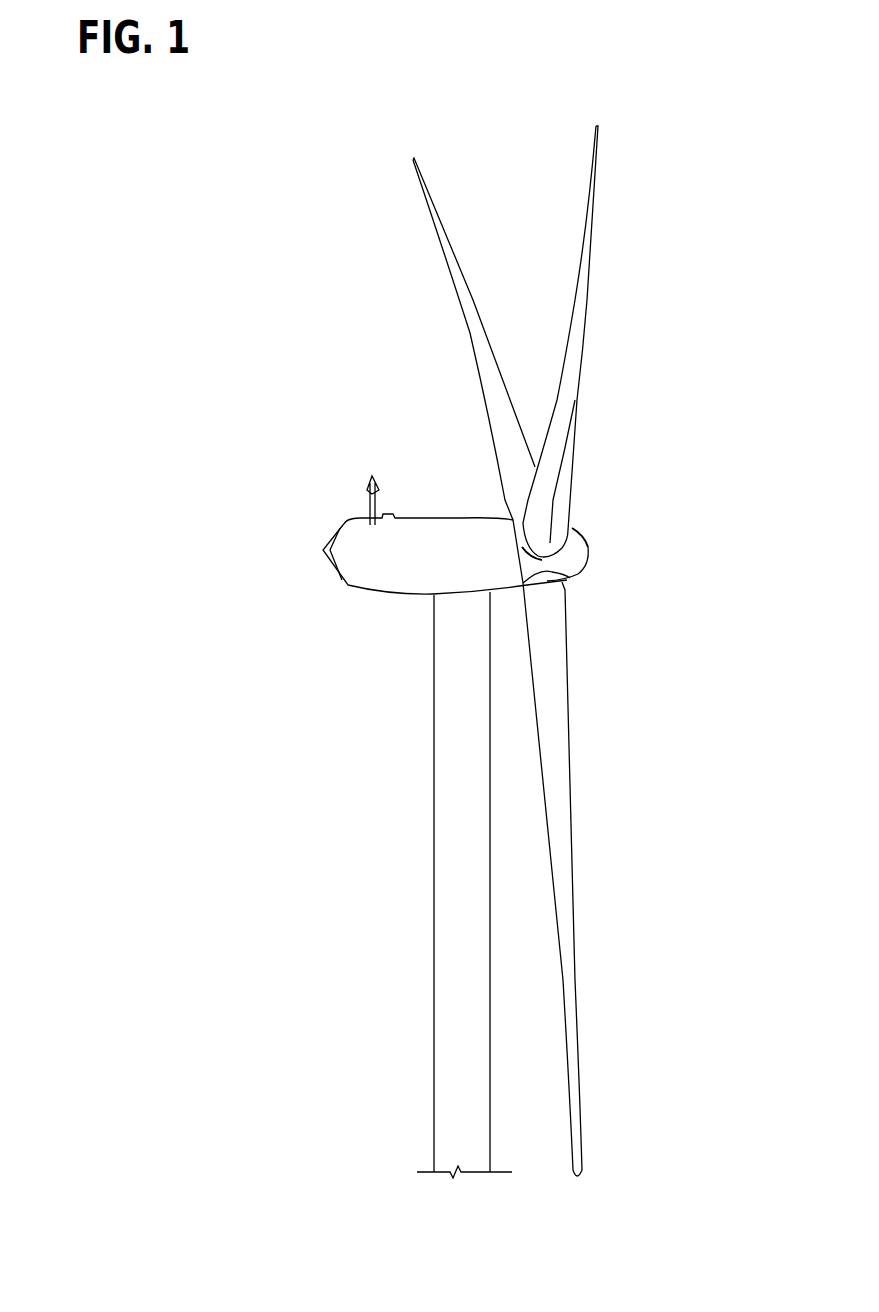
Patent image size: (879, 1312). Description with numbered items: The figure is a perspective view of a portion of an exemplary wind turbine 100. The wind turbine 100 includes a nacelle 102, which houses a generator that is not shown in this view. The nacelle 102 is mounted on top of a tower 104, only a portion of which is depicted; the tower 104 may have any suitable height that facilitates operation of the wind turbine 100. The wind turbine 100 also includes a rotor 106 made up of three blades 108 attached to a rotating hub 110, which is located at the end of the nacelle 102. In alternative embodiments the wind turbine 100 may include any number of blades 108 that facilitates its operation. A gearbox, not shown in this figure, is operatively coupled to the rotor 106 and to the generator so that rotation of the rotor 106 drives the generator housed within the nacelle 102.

The wind turbine 100 is at (313, 203).
The nacelle 102 is at (377, 590).
The tower 104 is at (433, 838).
The rotor 106 is at (633, 320).
The blades 108 is at (447, 235).
The rotating hub 110 is at (590, 557).